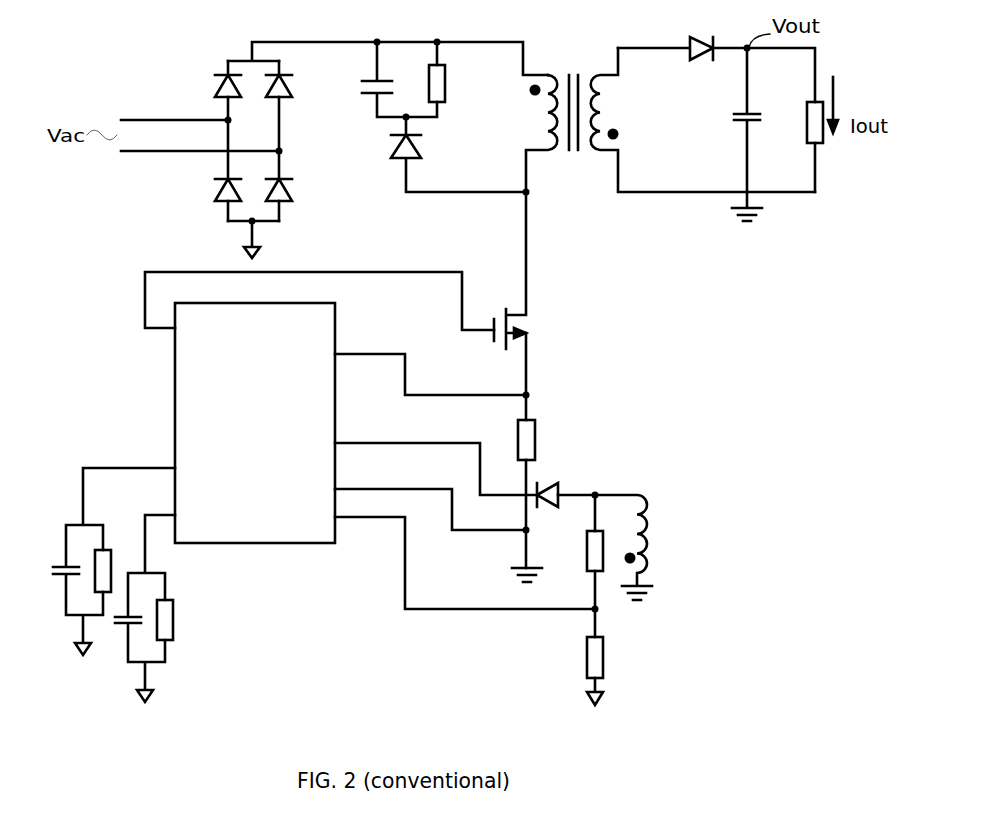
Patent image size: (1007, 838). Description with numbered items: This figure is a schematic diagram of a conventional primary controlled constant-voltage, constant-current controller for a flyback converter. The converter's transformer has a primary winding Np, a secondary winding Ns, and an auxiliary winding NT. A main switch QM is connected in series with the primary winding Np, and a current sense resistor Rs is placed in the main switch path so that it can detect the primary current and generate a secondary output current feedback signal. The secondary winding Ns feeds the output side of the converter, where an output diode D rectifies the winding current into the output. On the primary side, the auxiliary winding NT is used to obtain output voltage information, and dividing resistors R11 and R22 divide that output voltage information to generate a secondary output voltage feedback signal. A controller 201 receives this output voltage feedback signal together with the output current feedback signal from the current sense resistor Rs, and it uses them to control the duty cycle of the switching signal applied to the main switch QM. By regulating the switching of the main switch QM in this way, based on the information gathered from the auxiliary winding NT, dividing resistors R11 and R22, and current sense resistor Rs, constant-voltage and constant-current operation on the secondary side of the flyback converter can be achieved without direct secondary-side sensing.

The controller 201 is at (258, 401).
The main switch QM is at (527, 293).
The current sense resistor Rs is at (535, 436).
The dividing resistor R11 is at (587, 550).
The dividing resistor R22 is at (587, 655).
The auxiliary winding NT is at (638, 547).
The primary winding Np is at (531, 133).
The secondary winding Ns is at (703, 120).
The output diode D is at (698, 38).